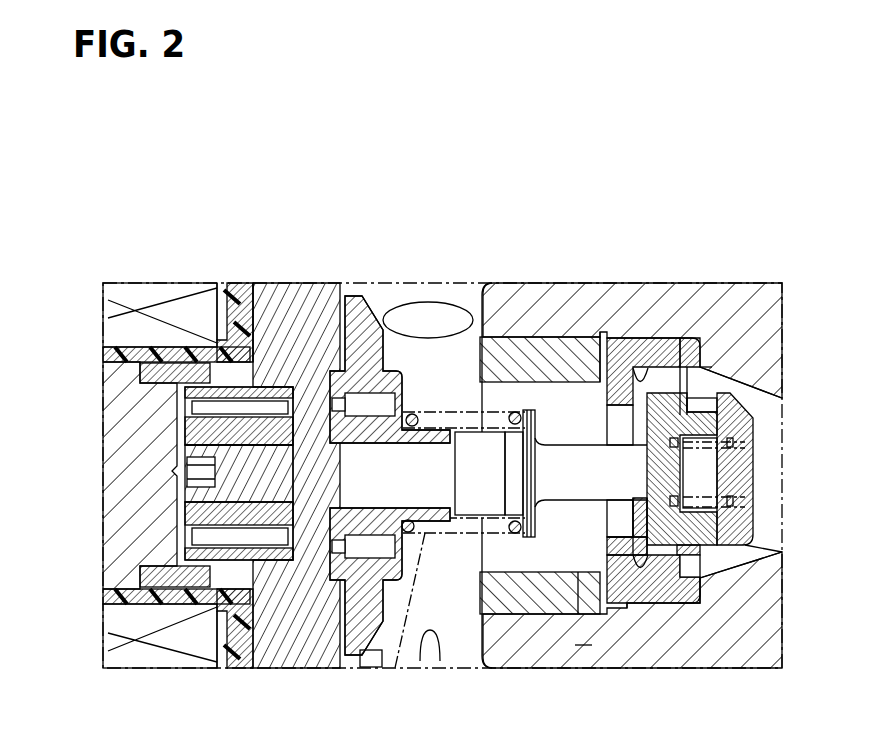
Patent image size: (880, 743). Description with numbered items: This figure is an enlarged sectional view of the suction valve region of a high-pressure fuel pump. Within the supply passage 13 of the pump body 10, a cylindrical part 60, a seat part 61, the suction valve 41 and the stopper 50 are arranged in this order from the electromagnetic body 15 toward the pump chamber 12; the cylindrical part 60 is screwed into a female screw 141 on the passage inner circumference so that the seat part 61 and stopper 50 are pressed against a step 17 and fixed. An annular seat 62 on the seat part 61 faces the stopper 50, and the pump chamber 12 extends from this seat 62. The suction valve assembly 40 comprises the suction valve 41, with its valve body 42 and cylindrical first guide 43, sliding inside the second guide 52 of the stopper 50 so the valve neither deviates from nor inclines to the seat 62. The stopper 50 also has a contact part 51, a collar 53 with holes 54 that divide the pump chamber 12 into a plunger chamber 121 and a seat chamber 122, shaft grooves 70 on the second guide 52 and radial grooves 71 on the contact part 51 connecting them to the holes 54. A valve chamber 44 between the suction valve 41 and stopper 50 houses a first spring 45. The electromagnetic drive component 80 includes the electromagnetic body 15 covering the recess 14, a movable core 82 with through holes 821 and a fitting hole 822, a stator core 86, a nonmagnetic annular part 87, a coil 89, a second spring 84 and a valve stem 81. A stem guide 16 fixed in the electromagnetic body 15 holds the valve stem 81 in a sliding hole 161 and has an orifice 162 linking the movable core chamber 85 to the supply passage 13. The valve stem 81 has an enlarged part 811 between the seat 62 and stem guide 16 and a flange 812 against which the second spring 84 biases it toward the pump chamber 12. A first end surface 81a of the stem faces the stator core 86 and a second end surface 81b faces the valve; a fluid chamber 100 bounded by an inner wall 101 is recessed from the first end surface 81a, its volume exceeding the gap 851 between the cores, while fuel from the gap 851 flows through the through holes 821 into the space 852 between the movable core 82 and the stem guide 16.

The pump body 10 is at (743, 330).
The pump chamber 12 is at (764, 512).
The supply passage 13 is at (433, 395).
The recess 14 is at (440, 632).
The electromagnetic body 15 is at (273, 600).
The stem guide 16 is at (378, 585).
The step 17 is at (695, 606).
The suction valve assembly 40 is at (562, 337).
The suction valve 41 is at (632, 612).
The valve body 42 is at (612, 600).
The first guide 43 is at (706, 540).
The valve chamber 44 is at (695, 483).
The first spring 45 is at (745, 460).
The stopper 50 is at (740, 535).
The contact part 51 is at (682, 580).
The second guide 52 is at (750, 560).
The collar 53 is at (700, 365).
The holes 54 is at (750, 383).
The cylindrical part 60 is at (530, 600).
The seat part 61 is at (608, 375).
The seat 62 is at (620, 395).
The shaft grooves 70 is at (683, 378).
The radial grooves 71 is at (665, 392).
The electromagnetic drive component 80 is at (182, 278).
The valve stem 81 is at (342, 490).
The first end surface 81a is at (195, 446).
The second end surface 81b is at (583, 648).
The movable core 82 is at (208, 600).
The second spring 84 is at (397, 668).
The movable core chamber 85 is at (300, 400).
The stator core 86 is at (130, 531).
The annular part 87 is at (160, 372).
The coil 89 is at (153, 330).
The fluid chamber 100 is at (187, 483).
The inner wall 101 is at (202, 468).
The plunger chamber 121 is at (762, 434).
The seat chamber 122 is at (640, 385).
The female screw 141 is at (578, 616).
The sliding hole 161 is at (396, 392).
The orifice 162 is at (336, 370).
The enlarged part 811 is at (485, 530).
The flange 812 is at (528, 425).
The through holes 821 is at (262, 415).
The fitting hole 822 is at (229, 664).
The gap 851 is at (217, 423).
The space 852 is at (292, 556).